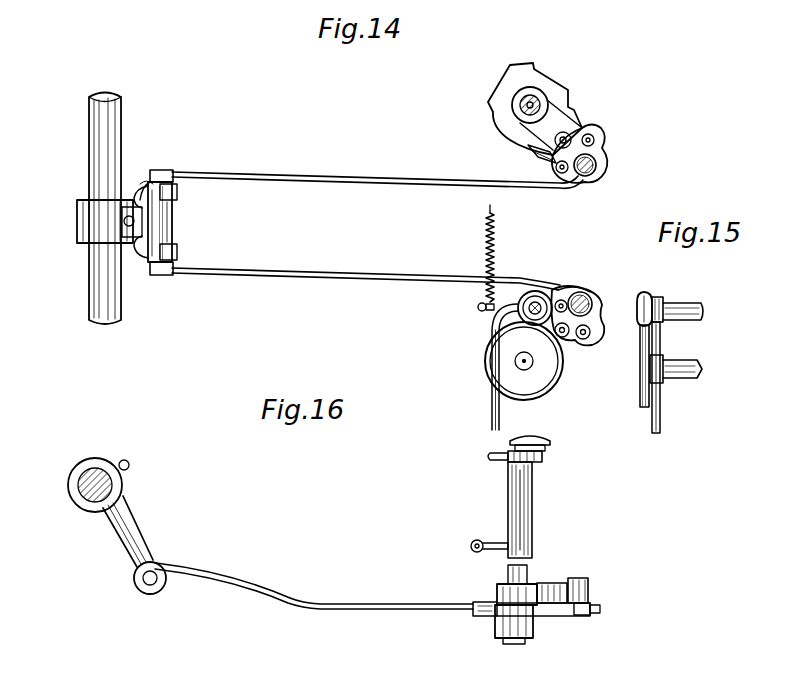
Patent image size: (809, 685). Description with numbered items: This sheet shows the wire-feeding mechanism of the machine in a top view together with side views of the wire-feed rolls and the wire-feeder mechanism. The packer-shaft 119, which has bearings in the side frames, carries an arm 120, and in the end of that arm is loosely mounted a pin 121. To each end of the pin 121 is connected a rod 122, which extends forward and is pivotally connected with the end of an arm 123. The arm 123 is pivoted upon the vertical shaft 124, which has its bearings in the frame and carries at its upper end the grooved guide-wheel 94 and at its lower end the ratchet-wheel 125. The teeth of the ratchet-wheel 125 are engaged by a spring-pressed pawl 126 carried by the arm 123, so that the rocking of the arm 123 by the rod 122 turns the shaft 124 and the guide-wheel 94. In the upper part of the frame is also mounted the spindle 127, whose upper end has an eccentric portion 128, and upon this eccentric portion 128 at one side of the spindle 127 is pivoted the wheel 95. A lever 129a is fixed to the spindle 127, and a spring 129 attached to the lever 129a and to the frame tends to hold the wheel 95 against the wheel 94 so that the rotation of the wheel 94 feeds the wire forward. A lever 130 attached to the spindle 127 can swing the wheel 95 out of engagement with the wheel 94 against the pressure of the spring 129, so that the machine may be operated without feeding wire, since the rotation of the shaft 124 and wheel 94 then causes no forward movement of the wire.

In FIG. 14, the grooved guide-wheel 94 is at (524, 361).
In FIG. 15, the grooved guide-wheel 94 is at (641, 408).
In FIG. 14, the wheel 95 is at (578, 292).
In FIG. 15, the wheel 95 is at (642, 295).
In FIG. 16, the wheel 95 is at (530, 440).
In FIG. 14, the packer-shaft 119 is at (112, 127).
In FIG. 14, the arm 120 is at (140, 198).
In FIG. 16, the arm 120 is at (130, 526).
In FIG. 14, the pin 121 is at (172, 229).
In FIG. 16, the pin 121 is at (148, 584).
In FIG. 14, the rod 122 is at (360, 183).
In FIG. 16, the rod 122 is at (333, 604).
In FIG. 14, the arm 123 is at (580, 136).
In FIG. 16, the arm 123 is at (540, 592).
In FIG. 14, the vertical shaft 124 is at (534, 100).
In FIG. 15, the vertical shaft 124 is at (693, 379).
In FIG. 16, the vertical shaft 124 is at (511, 513).
In FIG. 14, the ratchet-wheel 125 is at (568, 84).
In FIG. 16, the ratchet-wheel 125 is at (537, 616).
In FIG. 14, the spring-pressed pawl 126 is at (540, 158).
In FIG. 14, the spindle 127 is at (533, 300).
In FIG. 15, the spindle 127 is at (703, 311).
In FIG. 16, the spindle 127 is at (533, 531).
In FIG. 15, the eccentric portion 128 is at (658, 297).
In FIG. 16, the eccentric portion 128 is at (534, 462).
In FIG. 14, the spring 129 is at (488, 258).
In FIG. 16, the spring 129 is at (471, 545).
In FIG. 14, the lever 129a is at (483, 312).
In FIG. 16, the lever 129a is at (495, 556).
In FIG. 14, the lever 130 is at (492, 412).
In FIG. 15, the lever 130 is at (656, 436).
In FIG. 16, the lever 130 is at (491, 461).